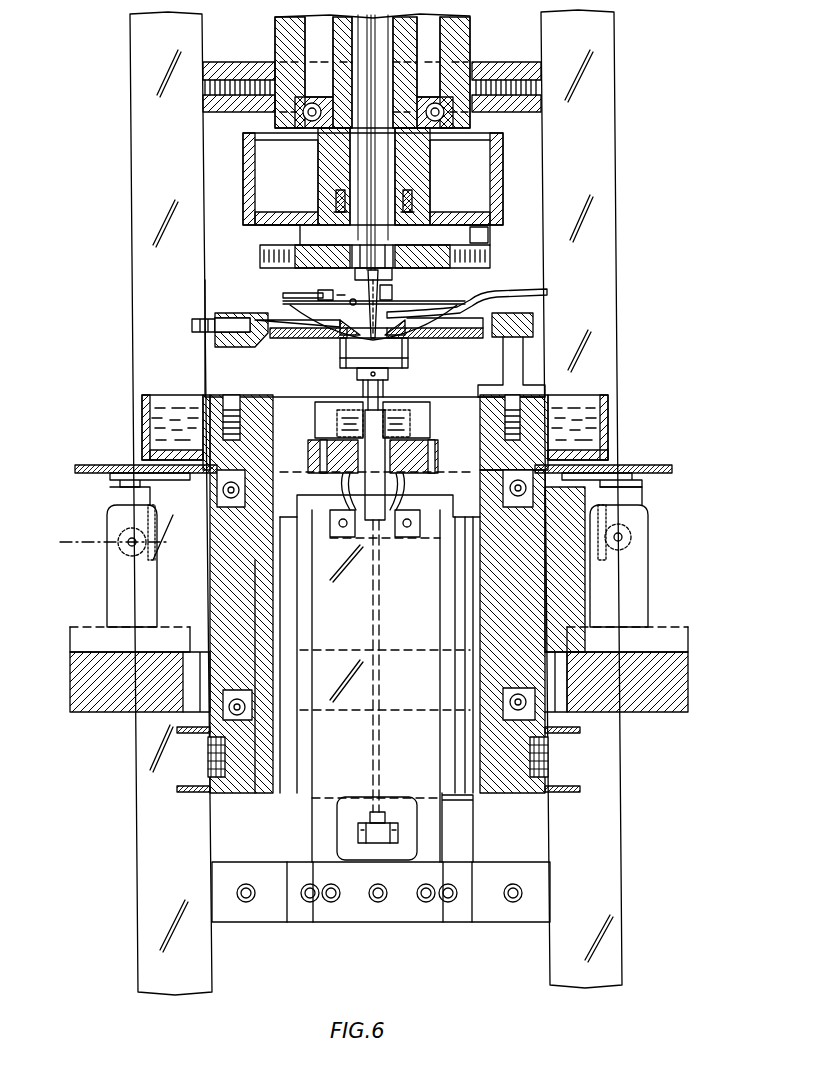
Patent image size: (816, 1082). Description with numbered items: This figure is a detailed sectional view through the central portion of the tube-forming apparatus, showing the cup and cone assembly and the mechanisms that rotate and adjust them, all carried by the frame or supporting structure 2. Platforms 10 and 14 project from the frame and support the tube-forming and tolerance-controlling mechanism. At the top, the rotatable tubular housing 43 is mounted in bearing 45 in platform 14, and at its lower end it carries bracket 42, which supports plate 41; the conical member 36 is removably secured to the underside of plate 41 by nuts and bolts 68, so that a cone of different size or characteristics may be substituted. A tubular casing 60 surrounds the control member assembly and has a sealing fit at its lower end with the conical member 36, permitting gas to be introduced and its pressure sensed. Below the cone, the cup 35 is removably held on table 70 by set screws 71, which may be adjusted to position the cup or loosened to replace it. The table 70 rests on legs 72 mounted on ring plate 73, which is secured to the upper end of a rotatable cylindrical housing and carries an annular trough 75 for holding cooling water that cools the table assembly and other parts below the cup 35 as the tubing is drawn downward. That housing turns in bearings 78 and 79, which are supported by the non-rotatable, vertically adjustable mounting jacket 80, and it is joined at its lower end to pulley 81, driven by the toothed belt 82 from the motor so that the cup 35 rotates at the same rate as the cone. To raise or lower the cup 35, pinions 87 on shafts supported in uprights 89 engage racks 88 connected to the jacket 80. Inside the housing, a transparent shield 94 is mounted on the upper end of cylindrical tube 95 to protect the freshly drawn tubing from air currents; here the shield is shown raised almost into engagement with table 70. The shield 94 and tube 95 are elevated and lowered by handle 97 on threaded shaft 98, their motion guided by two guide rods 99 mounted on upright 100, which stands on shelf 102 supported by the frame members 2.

The frame or supporting structure 2 is at (631, 142).
The platform 14 is at (540, 62).
The tubular casing 60 is at (372, 40).
The rotatable tubular housing 43 is at (413, 40).
The bearing 45 is at (287, 125).
The bracket 42 is at (243, 170).
The nuts and bolts 68 is at (345, 262).
The plate 41 is at (440, 242).
The conical member 36 is at (385, 286).
The set screws 71 is at (200, 320).
The ring plate 73 is at (215, 392).
The table 70 is at (297, 340).
The legs 72 is at (530, 355).
The cup 35 is at (382, 346).
The shield 94 is at (342, 348).
The cylindrical tube 95 is at (390, 385).
The bearing 78 is at (230, 487).
The annular trough 75 is at (610, 413).
The mounting jacket 80 is at (572, 533).
The platform 10 is at (723, 470).
The racks 88 is at (148, 562).
The pinions 87 is at (118, 533).
The uprights 89 is at (120, 600).
The guide rods 99 is at (323, 513).
The threaded shaft 98 is at (385, 803).
The handle 97 is at (400, 842).
The upright 100 is at (440, 777).
The bearing 79 is at (228, 710).
The pulley 81 is at (567, 790).
The toothed or geared belt 82 is at (552, 765).
The shelf 102 is at (303, 917).